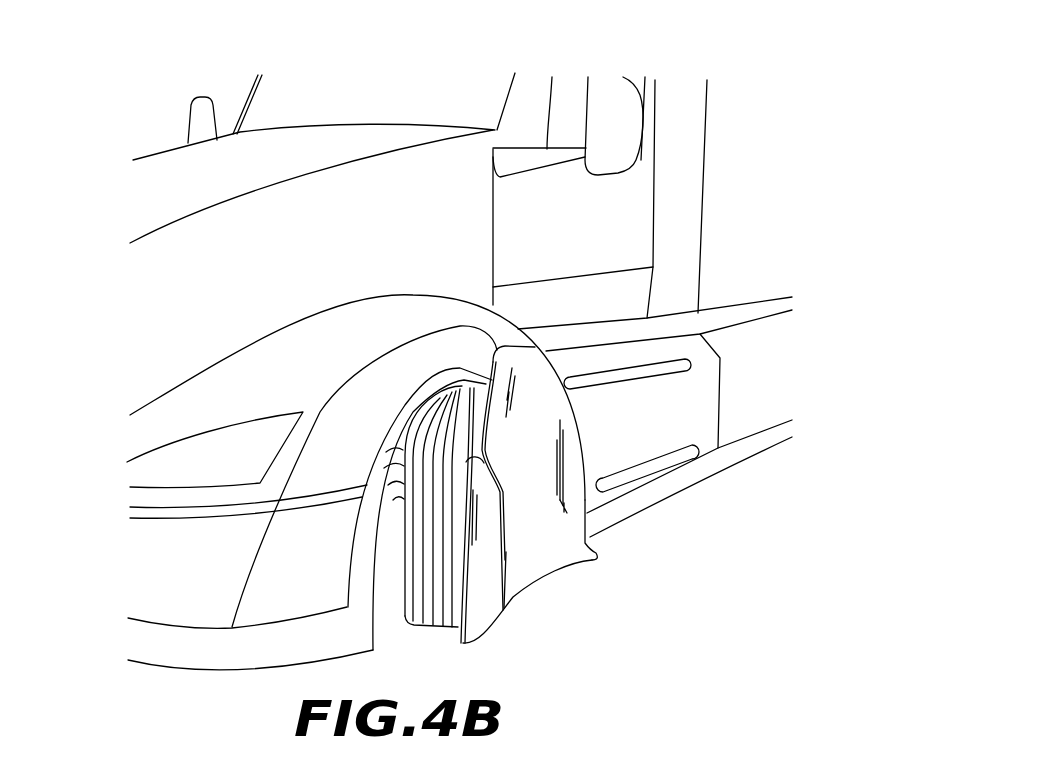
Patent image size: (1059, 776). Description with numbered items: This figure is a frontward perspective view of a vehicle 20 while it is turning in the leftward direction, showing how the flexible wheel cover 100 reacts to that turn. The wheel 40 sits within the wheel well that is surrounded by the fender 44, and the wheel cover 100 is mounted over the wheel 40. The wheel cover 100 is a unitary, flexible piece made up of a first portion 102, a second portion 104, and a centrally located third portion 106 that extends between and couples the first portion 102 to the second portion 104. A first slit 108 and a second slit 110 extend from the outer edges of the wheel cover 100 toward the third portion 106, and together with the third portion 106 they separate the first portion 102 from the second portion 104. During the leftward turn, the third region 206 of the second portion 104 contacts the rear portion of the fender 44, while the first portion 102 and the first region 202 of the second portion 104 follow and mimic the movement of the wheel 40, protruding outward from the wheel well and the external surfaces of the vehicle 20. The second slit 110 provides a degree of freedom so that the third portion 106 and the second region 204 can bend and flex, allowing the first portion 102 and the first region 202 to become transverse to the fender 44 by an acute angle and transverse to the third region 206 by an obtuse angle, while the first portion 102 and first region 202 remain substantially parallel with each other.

The vehicle 20 is at (158, 133).
The wheel 40 is at (430, 595).
The fender 44 is at (423, 400).
The wheel cover 100 is at (484, 338).
The first portion 102 is at (484, 606).
The second portion 104 is at (565, 538).
The third portion 106 is at (512, 532).
The first slit 108 is at (486, 500).
The second slit 110 is at (516, 588).
The first region 202 is at (502, 436).
The second region 204 is at (528, 386).
The third region 206 is at (587, 448).